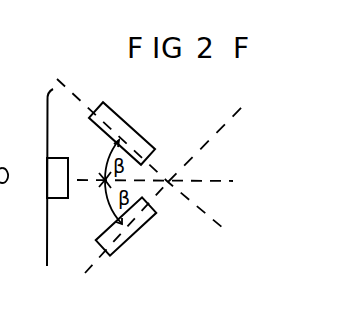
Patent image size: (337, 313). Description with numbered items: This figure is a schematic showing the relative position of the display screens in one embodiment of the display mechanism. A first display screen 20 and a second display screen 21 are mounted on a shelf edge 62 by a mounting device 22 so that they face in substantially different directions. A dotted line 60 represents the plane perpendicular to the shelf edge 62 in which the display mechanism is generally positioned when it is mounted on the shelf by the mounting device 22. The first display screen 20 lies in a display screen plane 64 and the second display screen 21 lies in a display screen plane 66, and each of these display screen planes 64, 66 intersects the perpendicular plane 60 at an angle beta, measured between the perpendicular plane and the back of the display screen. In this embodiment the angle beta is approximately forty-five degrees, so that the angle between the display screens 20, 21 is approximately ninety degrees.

The first display screen 20 is at (131, 124).
The second display screen 21 is at (121, 248).
The mounting device 22 is at (53, 169).
The perpendicular plane 60 is at (248, 182).
The shelf edge 62 is at (78, 284).
The display screen plane 64 is at (165, 168).
The display screen plane 66 is at (222, 135).